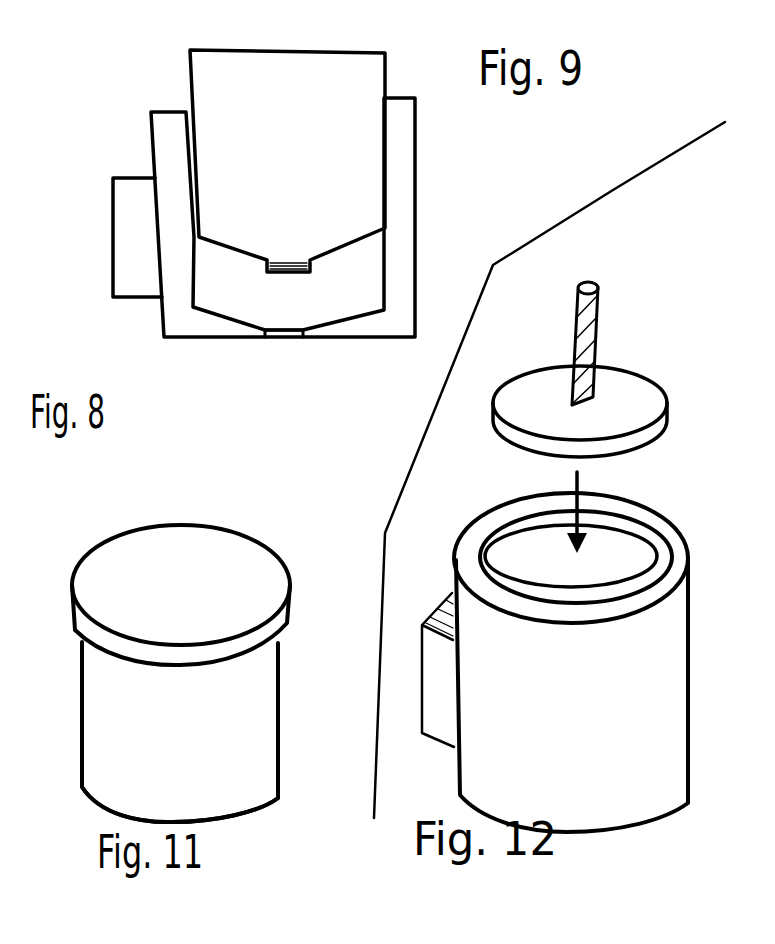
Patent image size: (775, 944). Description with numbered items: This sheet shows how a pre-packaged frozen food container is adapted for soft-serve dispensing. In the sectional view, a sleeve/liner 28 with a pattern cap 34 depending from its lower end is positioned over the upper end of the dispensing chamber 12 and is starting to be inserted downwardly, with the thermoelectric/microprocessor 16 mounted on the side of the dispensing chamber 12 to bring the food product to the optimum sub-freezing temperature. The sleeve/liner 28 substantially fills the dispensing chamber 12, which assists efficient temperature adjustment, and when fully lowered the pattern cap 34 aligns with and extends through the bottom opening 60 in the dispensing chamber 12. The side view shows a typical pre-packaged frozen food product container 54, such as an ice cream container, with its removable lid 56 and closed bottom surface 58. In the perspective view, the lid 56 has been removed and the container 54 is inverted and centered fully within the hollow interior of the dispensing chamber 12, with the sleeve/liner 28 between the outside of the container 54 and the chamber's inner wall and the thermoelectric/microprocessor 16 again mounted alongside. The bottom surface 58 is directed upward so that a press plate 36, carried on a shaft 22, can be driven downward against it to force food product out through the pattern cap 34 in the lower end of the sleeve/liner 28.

In FIG. 8, the dispensing chamber 12 is at (160, 138).
In FIG. 12, the dispensing chamber 12 is at (467, 550).
In FIG. 8, the thermoelectric/microprocessor 16 is at (127, 252).
In FIG. 12, the thermoelectric/microprocessor 16 is at (440, 728).
In FIG. 12, the shaft 22 is at (596, 323).
In FIG. 8, the sleeve/liner 28 is at (205, 75).
In FIG. 12, the sleeve/liner 28 is at (622, 523).
In FIG. 8, the pattern cap 34 is at (299, 283).
In FIG. 12, the press plate 36 is at (664, 416).
In FIG. 11, the container 54 is at (98, 713).
In FIG. 11, the lid 56 is at (90, 578).
In FIG. 12, the bottom surface 58 is at (622, 562).
In FIG. 11, the bottom surface 58 is at (266, 823).
In FIG. 8, the bottom opening 60 is at (292, 348).